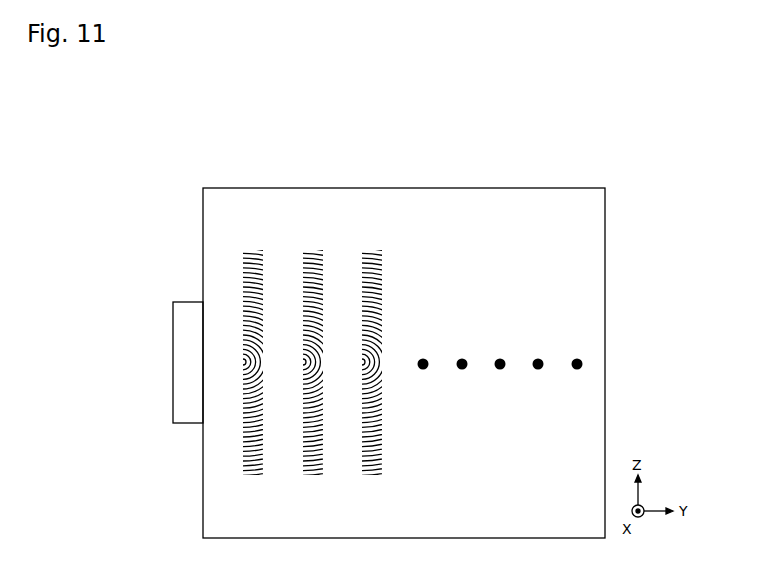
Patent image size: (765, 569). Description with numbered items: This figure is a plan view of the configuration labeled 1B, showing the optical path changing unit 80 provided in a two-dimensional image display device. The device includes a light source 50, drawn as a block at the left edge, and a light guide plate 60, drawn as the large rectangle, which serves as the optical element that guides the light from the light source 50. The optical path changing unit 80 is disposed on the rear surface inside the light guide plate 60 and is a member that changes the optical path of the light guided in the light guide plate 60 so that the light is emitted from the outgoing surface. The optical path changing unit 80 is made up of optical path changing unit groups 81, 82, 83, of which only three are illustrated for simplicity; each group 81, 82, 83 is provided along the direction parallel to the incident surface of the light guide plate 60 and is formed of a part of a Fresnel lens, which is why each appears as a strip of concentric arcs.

The liquid ejecting apparatus 1B is at (561, 148).
The light source 50 is at (181, 363).
The light guide plate 60 is at (492, 189).
The optical path changing unit 80 is at (390, 148).
The optical path changing unit group 81 is at (258, 249).
The optical path changing unit group 82 is at (317, 249).
The optical path changing unit group 83 is at (370, 249).